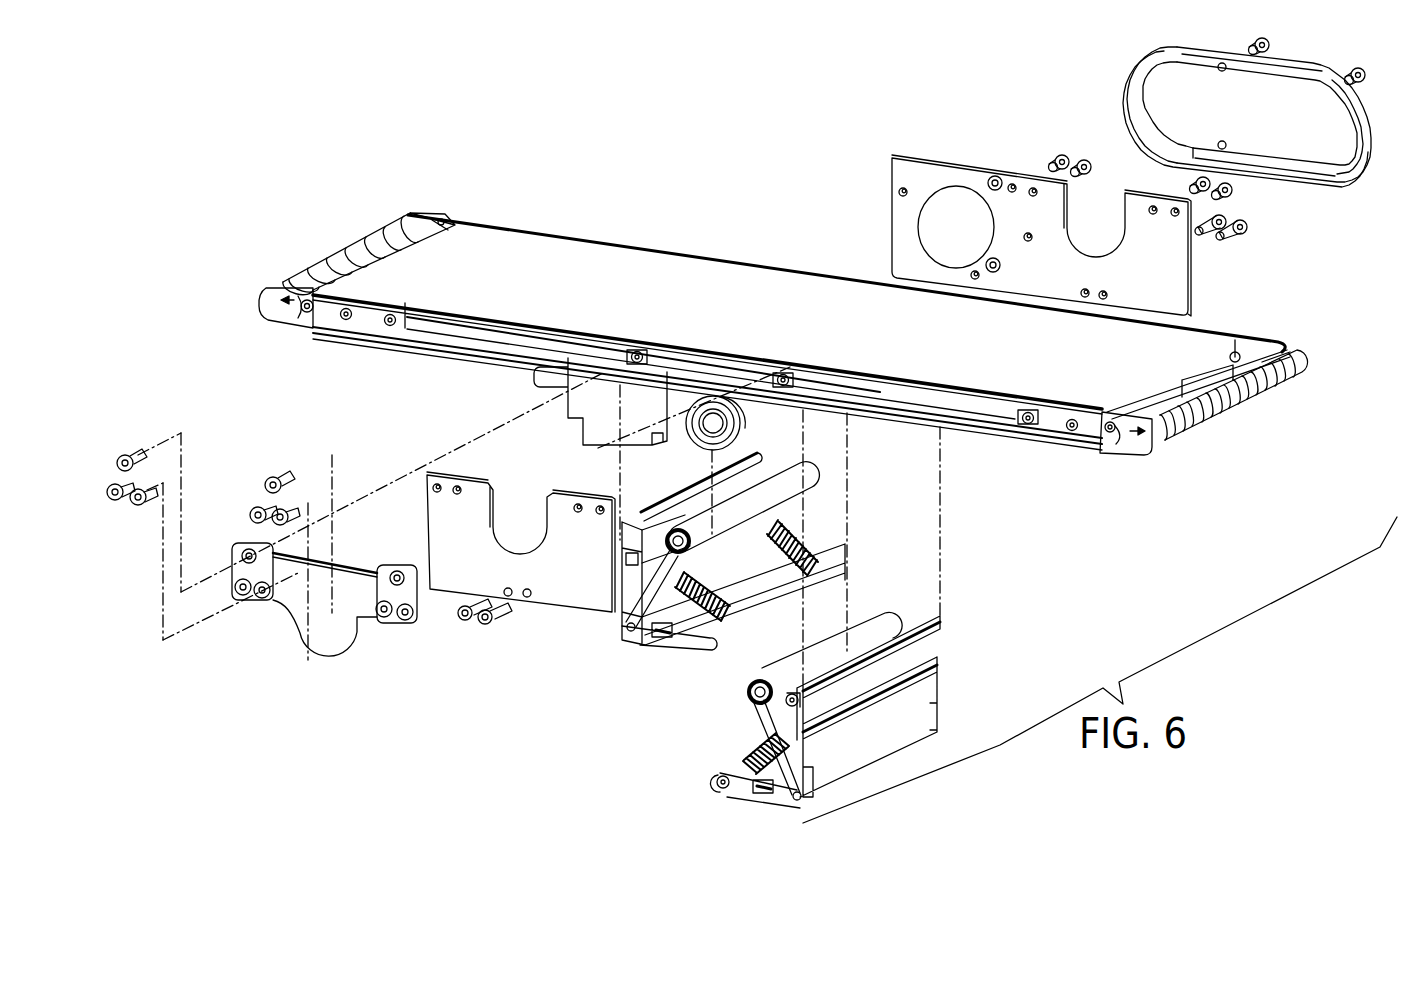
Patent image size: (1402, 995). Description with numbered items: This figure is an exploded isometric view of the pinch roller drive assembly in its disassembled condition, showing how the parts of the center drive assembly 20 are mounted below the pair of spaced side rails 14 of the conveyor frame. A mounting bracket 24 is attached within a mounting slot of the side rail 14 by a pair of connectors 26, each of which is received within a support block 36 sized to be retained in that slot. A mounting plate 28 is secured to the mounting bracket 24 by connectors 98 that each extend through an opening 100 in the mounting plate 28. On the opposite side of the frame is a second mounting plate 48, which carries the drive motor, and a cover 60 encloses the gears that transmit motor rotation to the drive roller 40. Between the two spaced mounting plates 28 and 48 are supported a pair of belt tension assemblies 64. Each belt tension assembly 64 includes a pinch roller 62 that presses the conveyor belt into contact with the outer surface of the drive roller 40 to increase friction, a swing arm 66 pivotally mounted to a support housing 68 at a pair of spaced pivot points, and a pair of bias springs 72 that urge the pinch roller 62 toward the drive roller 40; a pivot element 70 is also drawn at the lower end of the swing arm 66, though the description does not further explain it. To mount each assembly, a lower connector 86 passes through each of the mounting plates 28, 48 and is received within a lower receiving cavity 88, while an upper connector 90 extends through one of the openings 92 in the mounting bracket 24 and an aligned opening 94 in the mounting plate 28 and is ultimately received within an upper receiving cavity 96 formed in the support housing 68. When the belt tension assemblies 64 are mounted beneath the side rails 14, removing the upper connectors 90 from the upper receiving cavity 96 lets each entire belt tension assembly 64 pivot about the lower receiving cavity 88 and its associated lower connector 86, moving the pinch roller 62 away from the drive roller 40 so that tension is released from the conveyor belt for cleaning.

The side rail 14 is at (497, 318).
The drive assembly 20 is at (537, 556).
The mounting bracket 24 is at (313, 617).
The connectors 26 is at (128, 453).
The mounting plate 28 is at (483, 495).
The support block 36 is at (640, 350).
The drive roller 40 is at (790, 410).
The second mounting plate 48 is at (1183, 288).
The cover 60 is at (1358, 152).
The pinch rollers 62 is at (815, 486).
The belt tension assembly 64 is at (789, 628).
The swing arm 66 is at (648, 598).
The support housing 68 is at (622, 638).
The pivot pin 70 is at (795, 800).
The bias springs 72 is at (736, 614).
The lower connector 86 is at (483, 627).
The lower receiving cavity 88 is at (708, 648).
The upper connector 90 is at (272, 522).
The openings 92 is at (240, 598).
The opening 94 is at (424, 479).
The upper receiving cavity 96 is at (768, 460).
The connectors 98 is at (250, 509).
The opening 100 is at (456, 484).